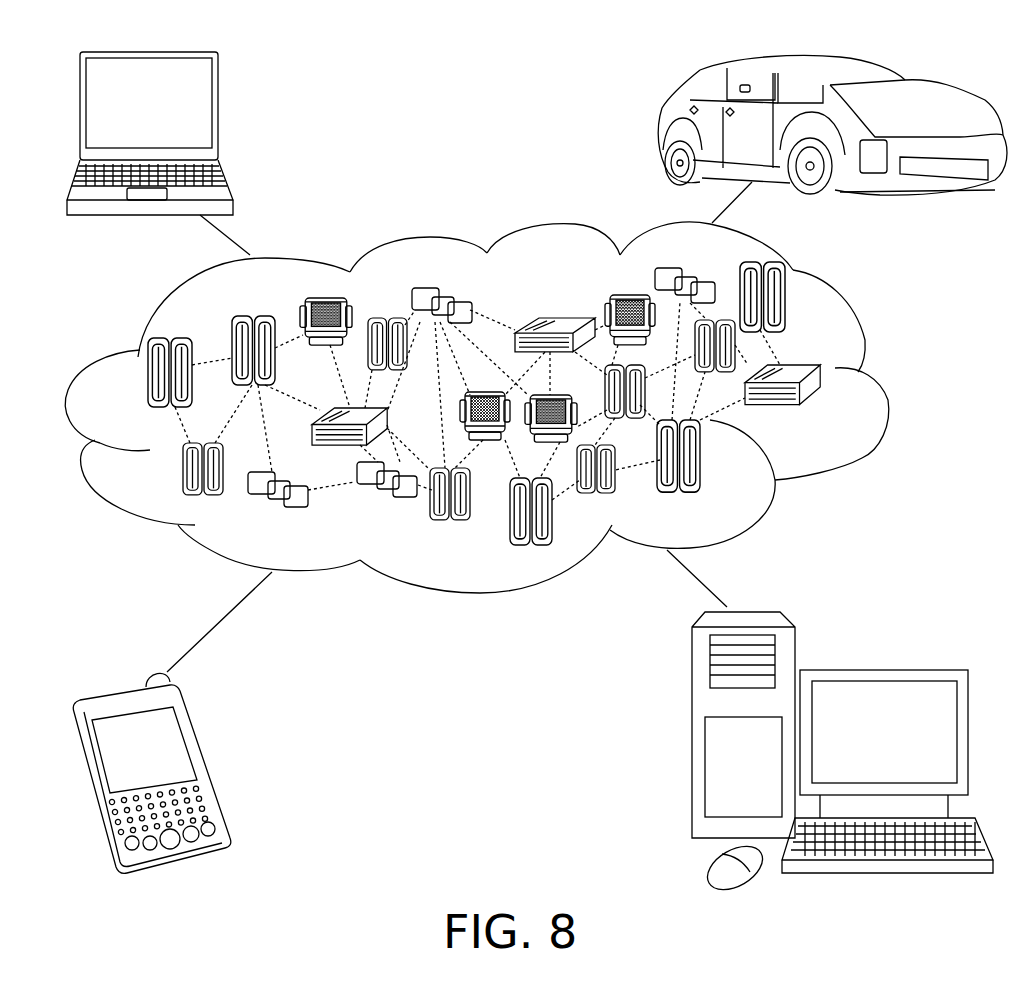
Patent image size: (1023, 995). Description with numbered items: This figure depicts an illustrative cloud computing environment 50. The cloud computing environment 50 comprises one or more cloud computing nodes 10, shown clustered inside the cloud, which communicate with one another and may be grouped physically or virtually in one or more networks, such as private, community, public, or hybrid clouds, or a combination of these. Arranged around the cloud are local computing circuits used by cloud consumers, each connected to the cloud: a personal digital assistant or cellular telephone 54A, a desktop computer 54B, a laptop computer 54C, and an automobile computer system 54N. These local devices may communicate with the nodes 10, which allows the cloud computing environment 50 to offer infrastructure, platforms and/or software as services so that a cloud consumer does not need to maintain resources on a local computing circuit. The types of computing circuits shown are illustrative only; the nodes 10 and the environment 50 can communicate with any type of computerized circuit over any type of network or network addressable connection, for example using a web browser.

The cloud computing nodes 10 is at (823, 412).
The cloud computing environment 50 is at (878, 384).
The personal digital assistant or cellular telephone 54A is at (206, 765).
The desktop computer 54B is at (878, 668).
The laptop computer 54C is at (218, 114).
The automobile computer system 54N is at (660, 130).